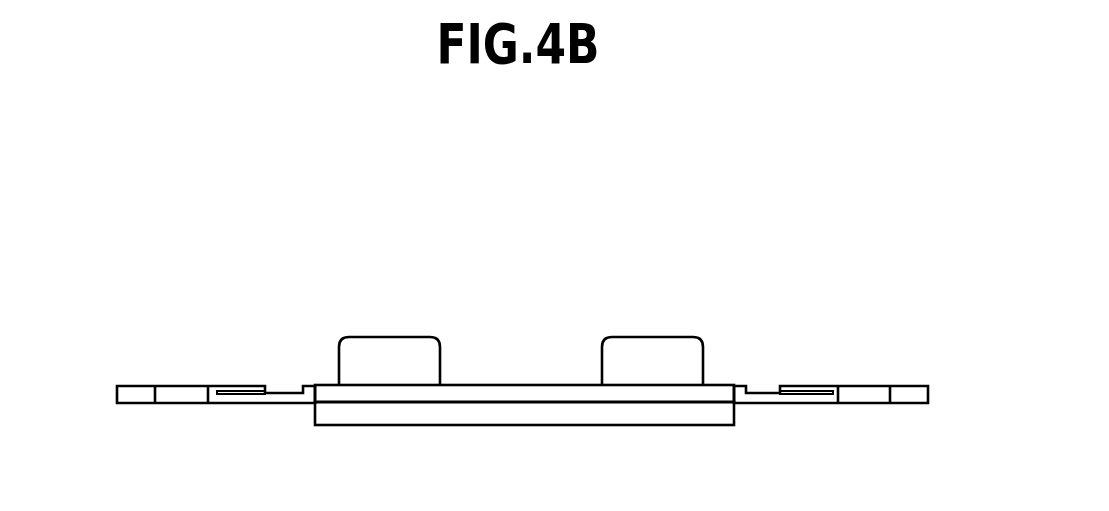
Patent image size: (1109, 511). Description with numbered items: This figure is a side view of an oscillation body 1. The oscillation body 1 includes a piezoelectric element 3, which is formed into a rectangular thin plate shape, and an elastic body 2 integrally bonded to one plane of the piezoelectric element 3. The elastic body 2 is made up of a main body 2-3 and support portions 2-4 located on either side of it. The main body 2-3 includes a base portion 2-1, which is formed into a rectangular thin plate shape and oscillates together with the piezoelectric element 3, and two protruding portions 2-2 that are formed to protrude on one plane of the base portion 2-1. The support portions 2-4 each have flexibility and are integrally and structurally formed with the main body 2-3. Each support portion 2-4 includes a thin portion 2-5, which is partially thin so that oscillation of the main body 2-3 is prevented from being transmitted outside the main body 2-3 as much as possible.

The oscillation body 1 is at (813, 126).
The elastic body 2 is at (954, 200).
The base portion 2-1 is at (512, 385).
The protruding portions 2-2 is at (390, 352).
The main body 2-3 is at (727, 272).
The support portions 2-4 is at (113, 272).
The thin portion 2-5 is at (285, 393).
The piezoelectric element 3 is at (463, 413).